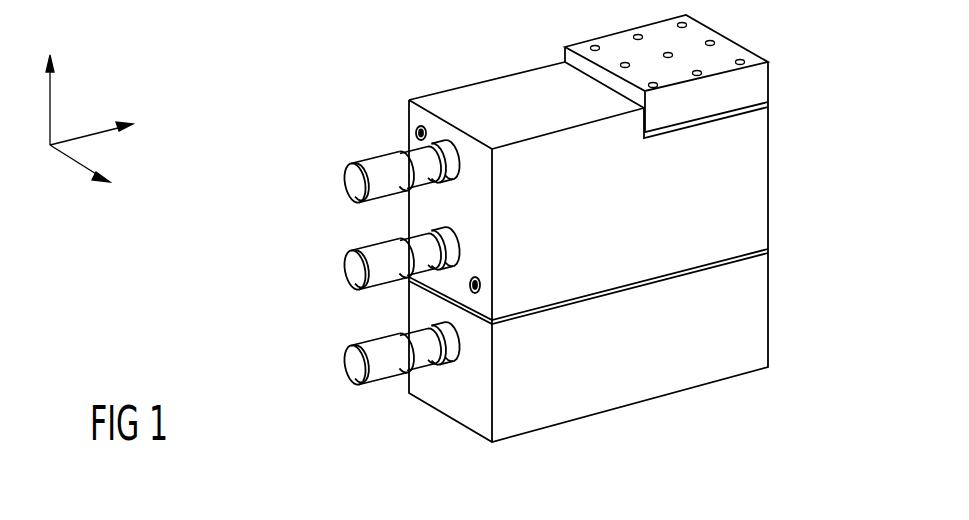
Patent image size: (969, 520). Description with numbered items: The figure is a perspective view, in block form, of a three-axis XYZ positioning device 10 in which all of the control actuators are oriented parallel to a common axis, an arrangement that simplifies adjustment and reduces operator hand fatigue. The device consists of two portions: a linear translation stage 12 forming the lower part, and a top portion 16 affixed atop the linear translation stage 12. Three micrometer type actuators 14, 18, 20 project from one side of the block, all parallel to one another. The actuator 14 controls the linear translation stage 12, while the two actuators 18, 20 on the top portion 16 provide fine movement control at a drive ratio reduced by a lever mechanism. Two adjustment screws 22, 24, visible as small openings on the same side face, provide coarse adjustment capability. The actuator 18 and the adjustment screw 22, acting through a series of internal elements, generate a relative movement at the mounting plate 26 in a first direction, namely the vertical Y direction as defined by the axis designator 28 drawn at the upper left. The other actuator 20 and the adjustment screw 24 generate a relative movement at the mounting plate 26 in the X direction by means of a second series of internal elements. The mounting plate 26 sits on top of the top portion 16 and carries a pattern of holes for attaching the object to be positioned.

The 3-axis positioning device 10 is at (515, 32).
The linear translation stage 12 is at (722, 327).
The actuator 14 is at (355, 365).
The top portion 16 is at (725, 182).
The actuator 18 is at (355, 183).
The actuator 20 is at (355, 270).
The adjustment screw 22 is at (478, 282).
The adjustment screw 24 is at (415, 135).
The mounting plate 26 is at (725, 48).
The axis designator 28 is at (80, 97).